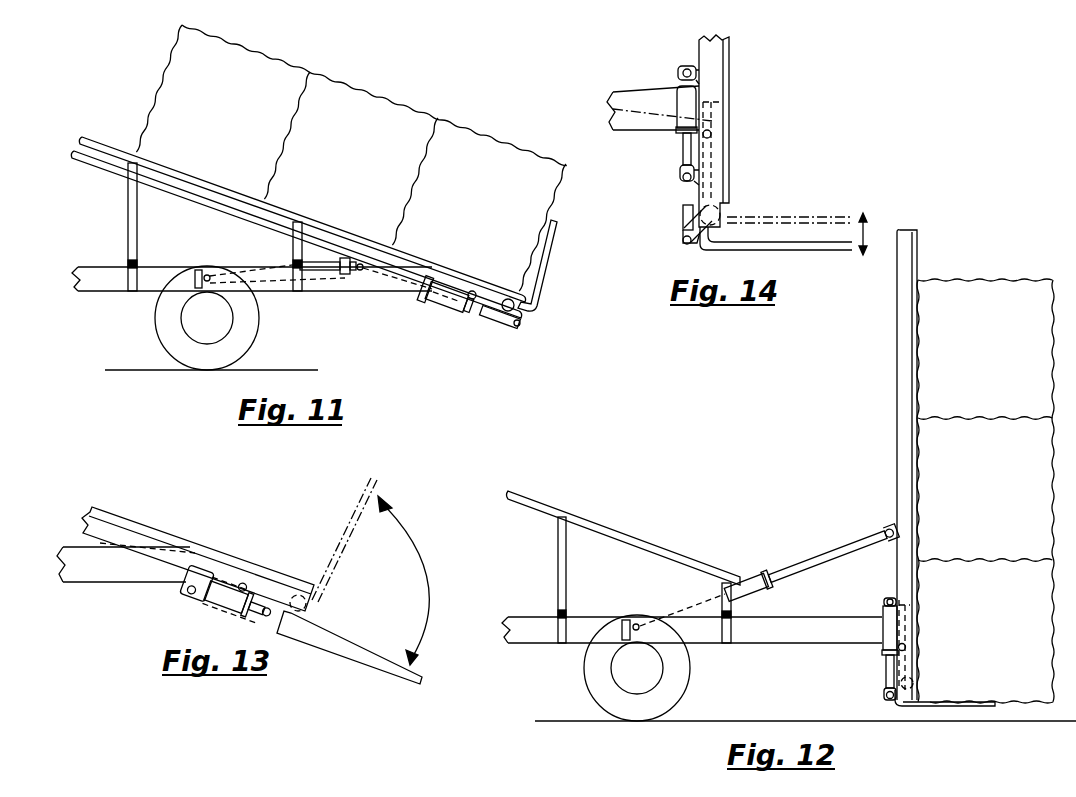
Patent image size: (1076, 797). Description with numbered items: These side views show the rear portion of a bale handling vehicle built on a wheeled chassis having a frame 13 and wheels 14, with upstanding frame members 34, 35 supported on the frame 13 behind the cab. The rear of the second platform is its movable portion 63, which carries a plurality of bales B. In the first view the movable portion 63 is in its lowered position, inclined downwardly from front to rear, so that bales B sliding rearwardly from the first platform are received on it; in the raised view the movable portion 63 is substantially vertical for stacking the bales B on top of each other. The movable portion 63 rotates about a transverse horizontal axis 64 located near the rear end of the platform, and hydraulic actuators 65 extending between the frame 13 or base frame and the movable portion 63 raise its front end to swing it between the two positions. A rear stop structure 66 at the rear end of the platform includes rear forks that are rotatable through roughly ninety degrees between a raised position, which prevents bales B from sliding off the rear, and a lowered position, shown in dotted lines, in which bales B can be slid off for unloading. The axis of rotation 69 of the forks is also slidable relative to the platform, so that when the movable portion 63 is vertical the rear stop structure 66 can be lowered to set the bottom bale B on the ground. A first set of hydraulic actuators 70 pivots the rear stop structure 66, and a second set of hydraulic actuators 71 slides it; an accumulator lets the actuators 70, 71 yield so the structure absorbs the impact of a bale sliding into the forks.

In FIG. 11, the bales B is at (268, 60).
In FIG. 12, the bales B is at (975, 292).
In FIG. 11, the frame 13 is at (120, 287).
In FIG. 12, the frame 13 is at (545, 637).
In FIG. 13, the frame 13 is at (130, 575).
In FIG. 11, the wheels 14 is at (175, 335).
In FIG. 12, the wheels 14 is at (608, 693).
In FIG. 11, the upstanding frame member 34 is at (130, 218).
In FIG. 12, the upstanding frame member 34 is at (562, 578).
In FIG. 11, the upstanding frame member 35 is at (297, 248).
In FIG. 12, the upstanding frame member 35 is at (733, 604).
In FIG. 11, the movable portion 63 is at (107, 153).
In FIG. 12, the movable portion 63 is at (907, 378).
In FIG. 13, the movable portion 63 is at (115, 530).
In FIG. 14, the movable portion 63 is at (726, 63).
In FIG. 11, the transverse horizontal axis 64 is at (470, 290).
In FIG. 12, the transverse horizontal axis 64 is at (906, 646).
In FIG. 14, the transverse horizontal axis 64 is at (711, 134).
In FIG. 11, the hydraulic actuators 65 is at (333, 268).
In FIG. 12, the hydraulic actuators 65 is at (750, 582).
In FIG. 11, the rear stop structure 66 is at (536, 303).
In FIG. 12, the rear stop structure 66 is at (926, 706).
In FIG. 13, the rear stop structure 66 is at (318, 640).
In FIG. 14, the rear stop structure 66 is at (795, 250).
In FIG. 12, the axis of rotation 69 is at (913, 683).
In FIG. 14, the axis of rotation 69 is at (716, 213).
In FIG. 11, the first set of hydraulic actuators 70 is at (495, 316).
In FIG. 13, the first set of hydraulic actuators 70 is at (225, 607).
In FIG. 14, the first set of hydraulic actuators 70 is at (683, 216).
In FIG. 11, the second set of hydraulic actuators 71 is at (458, 306).
In FIG. 12, the second set of hydraulic actuators 71 is at (896, 649).
In FIG. 14, the second set of hydraulic actuators 71 is at (680, 100).